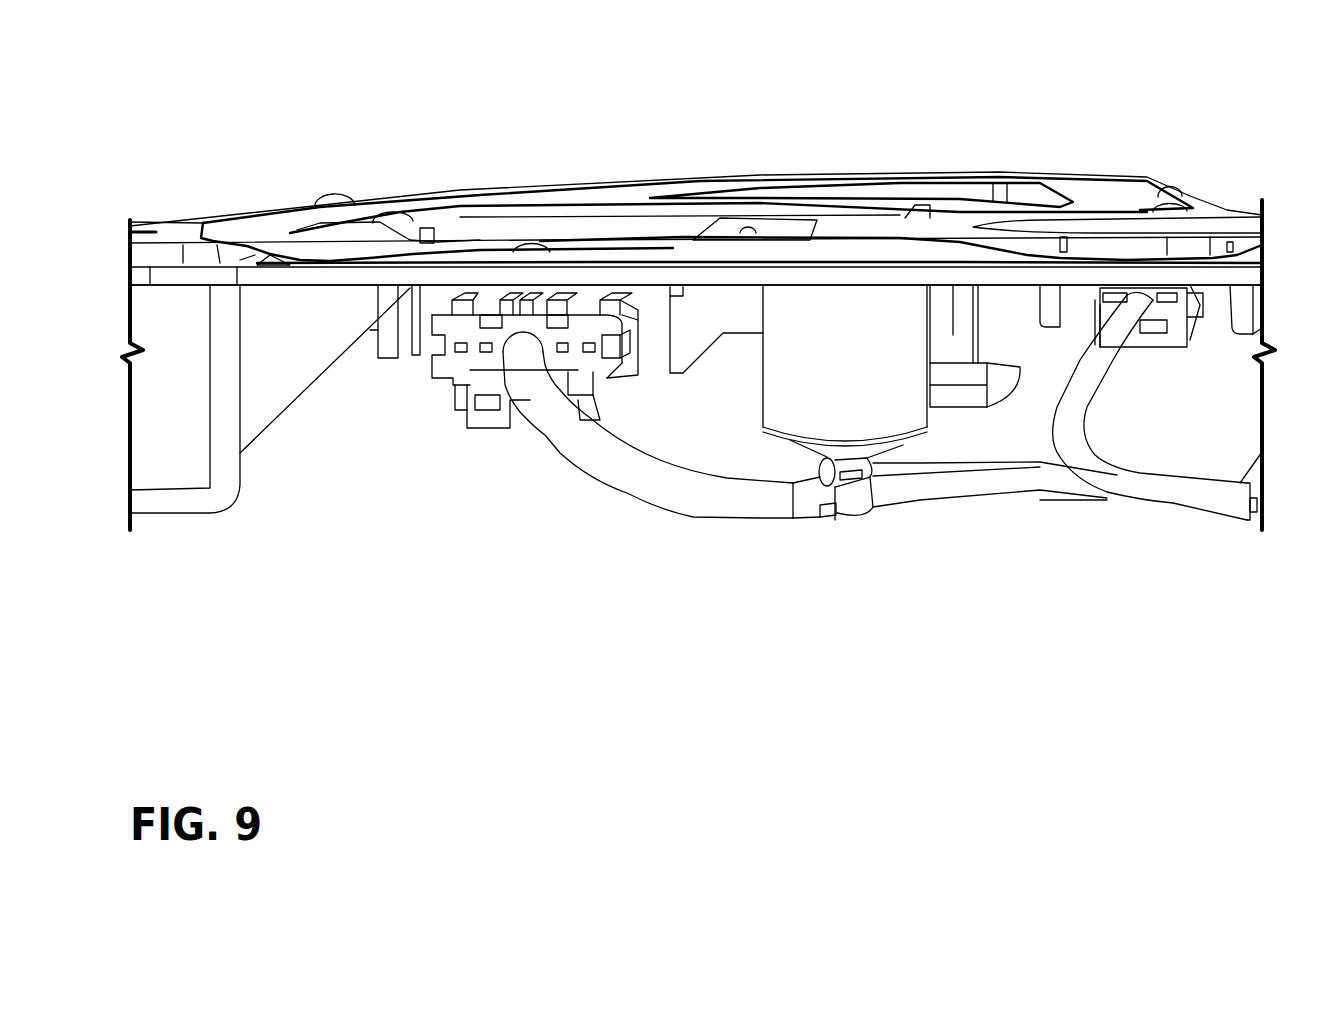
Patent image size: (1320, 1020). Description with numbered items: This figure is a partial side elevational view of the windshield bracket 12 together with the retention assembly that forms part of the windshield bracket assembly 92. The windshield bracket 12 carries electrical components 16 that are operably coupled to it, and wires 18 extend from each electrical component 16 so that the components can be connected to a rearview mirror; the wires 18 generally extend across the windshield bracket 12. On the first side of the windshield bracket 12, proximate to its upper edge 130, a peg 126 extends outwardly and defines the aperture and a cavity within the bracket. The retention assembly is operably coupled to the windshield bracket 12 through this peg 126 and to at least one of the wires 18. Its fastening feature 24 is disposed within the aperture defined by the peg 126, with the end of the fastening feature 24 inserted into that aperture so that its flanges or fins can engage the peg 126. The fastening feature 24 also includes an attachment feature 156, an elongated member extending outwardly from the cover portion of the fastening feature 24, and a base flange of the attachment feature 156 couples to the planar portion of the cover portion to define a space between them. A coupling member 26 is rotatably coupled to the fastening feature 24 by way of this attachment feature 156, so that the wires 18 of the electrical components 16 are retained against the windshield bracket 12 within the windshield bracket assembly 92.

The windshield bracket 12 is at (183, 268).
The upper edge 130 is at (330, 272).
The windshield bracket assembly 92 is at (992, 96).
The electrical components 16 is at (457, 363).
The wires 18 is at (572, 438).
The fastening feature 24 is at (790, 440).
The attachment feature 156 is at (815, 478).
The coupling member 26 is at (848, 498).
The peg 126 is at (883, 365).